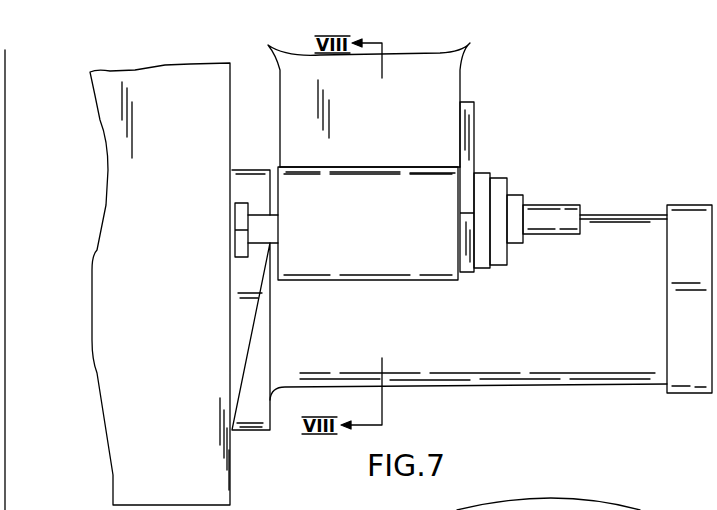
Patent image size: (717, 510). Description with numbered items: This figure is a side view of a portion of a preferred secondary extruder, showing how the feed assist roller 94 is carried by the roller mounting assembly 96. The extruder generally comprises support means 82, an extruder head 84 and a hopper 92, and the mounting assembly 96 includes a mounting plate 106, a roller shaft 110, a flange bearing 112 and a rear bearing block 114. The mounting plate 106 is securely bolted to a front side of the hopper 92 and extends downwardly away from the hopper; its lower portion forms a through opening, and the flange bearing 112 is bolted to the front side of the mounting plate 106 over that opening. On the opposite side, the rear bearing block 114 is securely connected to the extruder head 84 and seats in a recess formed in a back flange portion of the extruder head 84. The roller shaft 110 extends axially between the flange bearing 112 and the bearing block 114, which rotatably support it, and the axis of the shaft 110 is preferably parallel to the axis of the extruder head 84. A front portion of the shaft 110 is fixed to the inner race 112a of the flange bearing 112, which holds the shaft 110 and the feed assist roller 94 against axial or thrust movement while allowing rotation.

The support means 82 is at (186, 486).
The extruder head 84 is at (615, 373).
The hopper 92 is at (410, 70).
The feed assist roller 94 is at (387, 246).
The roller mounting assembly 96 is at (550, 102).
The mounting plate 106 is at (474, 134).
The roller shaft 110 is at (558, 205).
The flange bearing 112 is at (490, 270).
The inner race 112a is at (518, 245).
The rear bearing block 114 is at (235, 213).